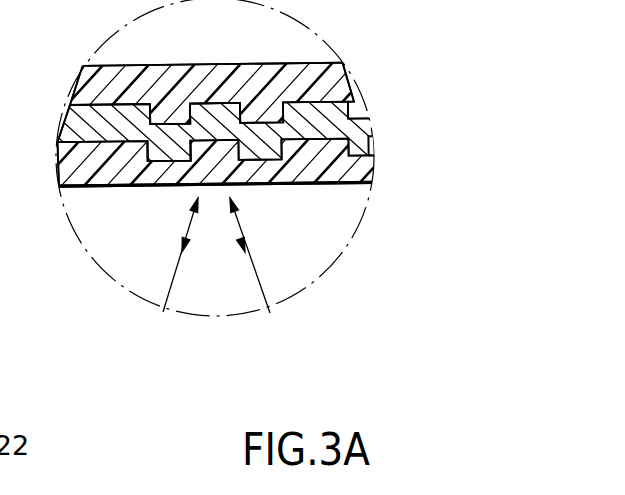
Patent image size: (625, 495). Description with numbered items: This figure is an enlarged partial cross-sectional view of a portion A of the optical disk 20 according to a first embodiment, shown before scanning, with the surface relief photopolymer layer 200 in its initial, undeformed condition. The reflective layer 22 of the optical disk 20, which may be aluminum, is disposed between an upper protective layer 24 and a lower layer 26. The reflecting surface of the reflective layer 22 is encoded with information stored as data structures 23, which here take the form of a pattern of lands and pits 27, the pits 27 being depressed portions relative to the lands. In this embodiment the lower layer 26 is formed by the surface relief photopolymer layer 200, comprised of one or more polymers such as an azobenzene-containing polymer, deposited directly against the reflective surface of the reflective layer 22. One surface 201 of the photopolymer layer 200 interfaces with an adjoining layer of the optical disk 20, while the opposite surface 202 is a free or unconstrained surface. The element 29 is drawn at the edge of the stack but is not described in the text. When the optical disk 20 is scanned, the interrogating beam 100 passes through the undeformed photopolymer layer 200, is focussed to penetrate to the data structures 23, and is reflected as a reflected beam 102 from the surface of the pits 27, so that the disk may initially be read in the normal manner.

The optical disk 20 is at (108, 63).
The reflective layer 22 is at (73, 120).
The data structures 23 is at (160, 150).
The upper protective layer 24 is at (302, 78).
The lower layer 26 is at (365, 185).
The pits 27 is at (170, 127).
The end projection 29 is at (372, 163).
The surface relief photopolymer layer 200 is at (65, 165).
The surface of the photopolymer layer 201 is at (363, 112).
The opposite surface of the photopolymer layer 202 is at (332, 183).
The interrogating beam 100 is at (170, 282).
The reflected beam 102 is at (263, 295).
The portion of the optical disk A is at (328, 277).